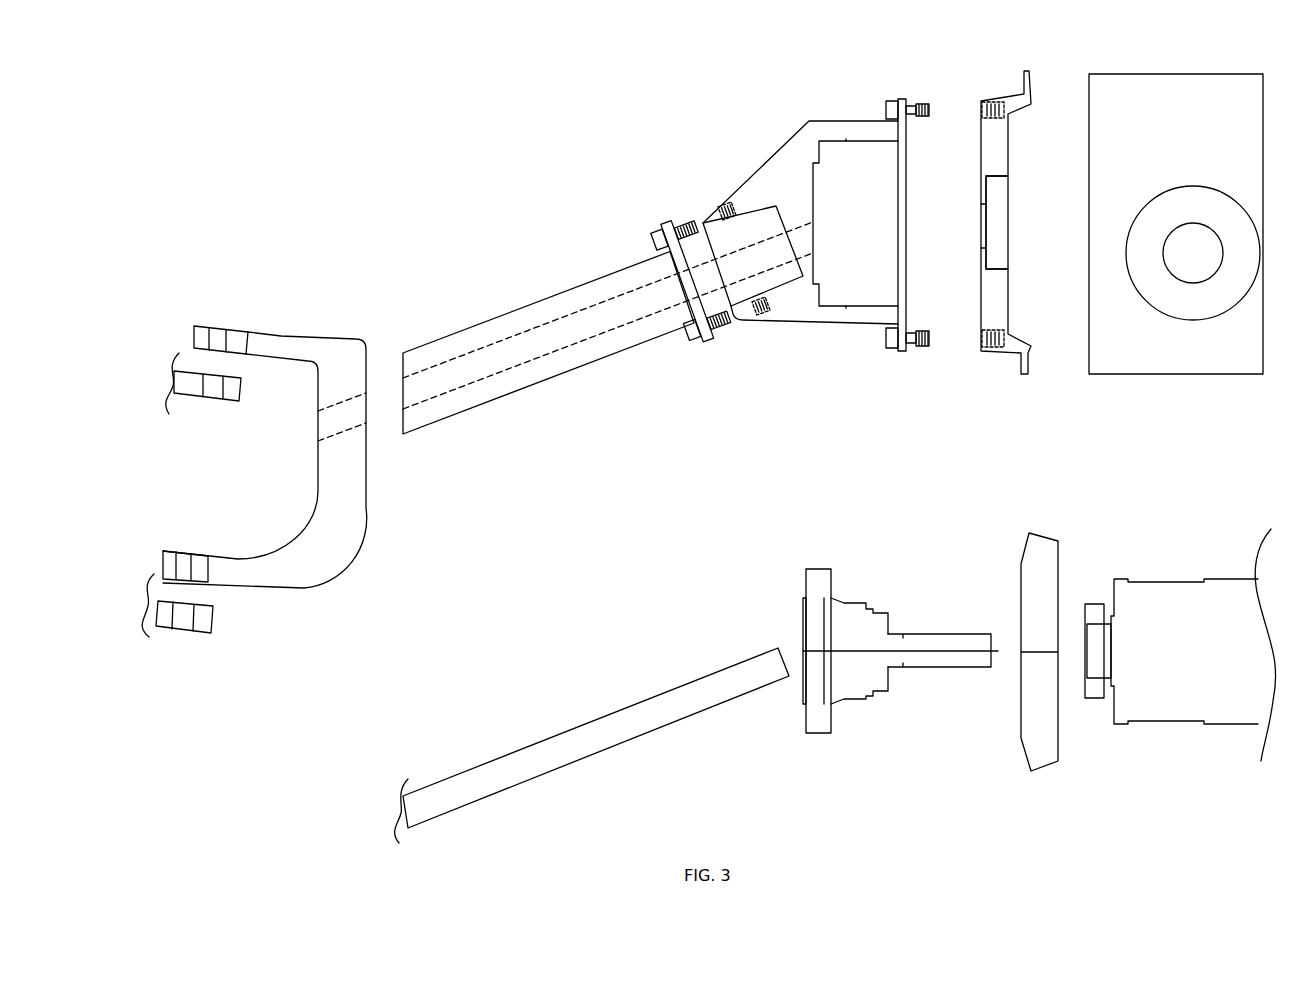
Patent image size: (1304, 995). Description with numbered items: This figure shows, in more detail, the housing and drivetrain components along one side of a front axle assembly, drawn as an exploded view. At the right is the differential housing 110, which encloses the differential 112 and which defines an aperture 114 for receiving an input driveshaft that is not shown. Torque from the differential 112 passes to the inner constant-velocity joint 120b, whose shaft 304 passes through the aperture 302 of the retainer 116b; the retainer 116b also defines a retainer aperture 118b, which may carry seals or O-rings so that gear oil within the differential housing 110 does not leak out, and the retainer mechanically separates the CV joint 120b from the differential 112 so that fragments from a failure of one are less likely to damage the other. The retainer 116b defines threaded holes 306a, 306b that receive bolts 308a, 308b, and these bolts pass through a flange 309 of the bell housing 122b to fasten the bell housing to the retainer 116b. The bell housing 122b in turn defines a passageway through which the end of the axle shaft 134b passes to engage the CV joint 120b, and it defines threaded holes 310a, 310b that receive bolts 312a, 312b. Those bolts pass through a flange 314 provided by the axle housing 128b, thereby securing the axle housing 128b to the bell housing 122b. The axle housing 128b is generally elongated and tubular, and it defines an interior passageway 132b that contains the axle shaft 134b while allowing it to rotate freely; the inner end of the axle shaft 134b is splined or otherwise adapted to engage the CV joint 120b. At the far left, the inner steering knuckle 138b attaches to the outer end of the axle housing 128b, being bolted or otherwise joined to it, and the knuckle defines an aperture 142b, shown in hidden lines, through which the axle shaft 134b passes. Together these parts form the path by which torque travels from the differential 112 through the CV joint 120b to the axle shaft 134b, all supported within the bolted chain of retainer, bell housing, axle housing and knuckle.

The differential housing 110 is at (1150, 73).
The differential 112 is at (1148, 697).
The aperture for receiving the input driveshaft 114 is at (1175, 185).
The retainer 116b is at (1023, 75).
The retainer aperture 118b is at (985, 220).
The inner constant-velocity joint 120b is at (865, 677).
The bell housing 122b is at (838, 323).
The axle housing 128b is at (577, 352).
The interior passageway 132b is at (412, 390).
The axle shaft 134b is at (583, 737).
The inner steering knuckle 138b is at (303, 570).
The aperture 142b is at (325, 425).
The aperture 302 is at (798, 242).
The shaft 304 is at (951, 643).
The threaded hole 306a is at (980, 112).
The threaded hole 306b is at (980, 338).
The bolt 308a is at (913, 117).
The bolt 308b is at (918, 327).
The flange 309 is at (897, 98).
The threaded hole 310a is at (728, 205).
The threaded hole 310b is at (763, 312).
The bolt 312a is at (672, 216).
The bolt 312b is at (727, 336).
The flange 314 is at (687, 290).